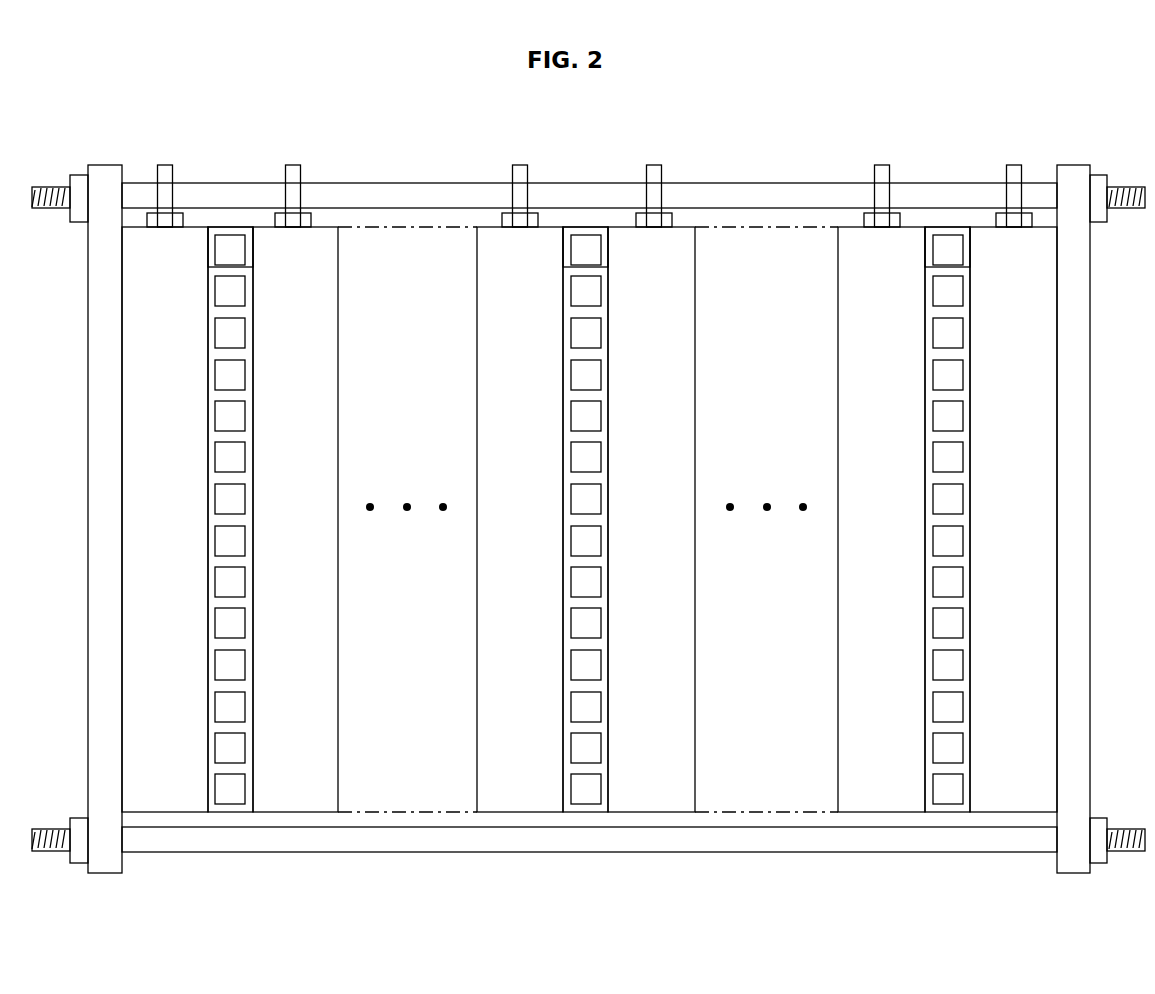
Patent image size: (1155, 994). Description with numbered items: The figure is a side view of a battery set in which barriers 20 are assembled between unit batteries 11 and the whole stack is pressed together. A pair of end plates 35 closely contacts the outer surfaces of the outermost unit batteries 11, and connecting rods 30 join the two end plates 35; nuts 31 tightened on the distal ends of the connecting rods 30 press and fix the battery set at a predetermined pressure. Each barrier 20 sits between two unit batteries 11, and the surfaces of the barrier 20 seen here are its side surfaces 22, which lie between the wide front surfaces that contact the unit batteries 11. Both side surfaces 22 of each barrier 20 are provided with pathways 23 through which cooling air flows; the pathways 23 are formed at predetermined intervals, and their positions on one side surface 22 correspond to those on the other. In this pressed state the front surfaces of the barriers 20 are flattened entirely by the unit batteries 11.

The unit battery 11 is at (589, 536).
The barrier 20 is at (589, 567).
The side surface 22 is at (229, 232).
The pathway 23 is at (237, 543).
The connecting rod 30 is at (438, 185).
The nut 31 is at (75, 178).
The end plate 35 is at (88, 353).